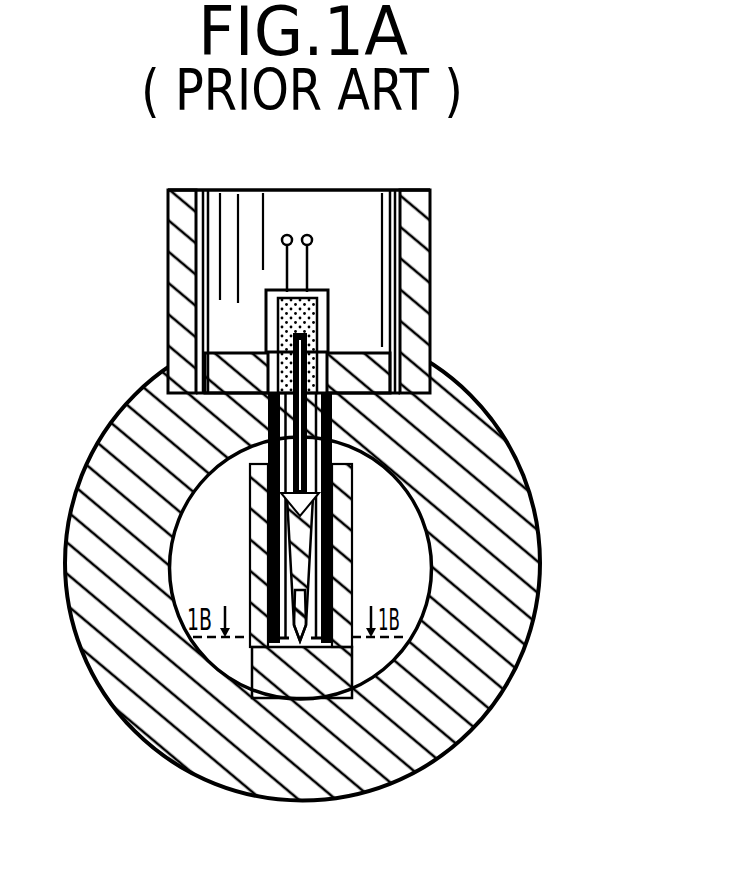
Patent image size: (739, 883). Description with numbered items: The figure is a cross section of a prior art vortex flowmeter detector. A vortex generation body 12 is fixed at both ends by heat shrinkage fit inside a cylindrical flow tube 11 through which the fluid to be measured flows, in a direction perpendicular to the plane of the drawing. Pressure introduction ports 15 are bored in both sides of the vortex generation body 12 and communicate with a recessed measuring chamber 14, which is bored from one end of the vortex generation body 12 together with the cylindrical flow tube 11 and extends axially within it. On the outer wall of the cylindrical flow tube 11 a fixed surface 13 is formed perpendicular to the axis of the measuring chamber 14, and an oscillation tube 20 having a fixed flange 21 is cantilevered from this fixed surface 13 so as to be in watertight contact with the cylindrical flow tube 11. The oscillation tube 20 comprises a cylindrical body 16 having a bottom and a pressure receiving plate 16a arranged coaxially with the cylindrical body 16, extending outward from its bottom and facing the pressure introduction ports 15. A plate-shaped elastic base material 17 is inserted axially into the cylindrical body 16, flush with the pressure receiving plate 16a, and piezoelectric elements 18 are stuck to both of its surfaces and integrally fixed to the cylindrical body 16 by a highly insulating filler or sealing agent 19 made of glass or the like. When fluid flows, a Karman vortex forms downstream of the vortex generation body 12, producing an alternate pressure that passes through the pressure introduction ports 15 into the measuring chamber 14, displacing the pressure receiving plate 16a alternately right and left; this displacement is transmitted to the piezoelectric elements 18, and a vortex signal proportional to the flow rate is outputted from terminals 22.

The cylindrical flow tube 11 is at (127, 710).
The vortex generation body 12 is at (252, 562).
The fixed surface 13 is at (200, 403).
The measuring chamber 14 is at (318, 522).
The pressure introduction ports 15 is at (248, 468).
The cylindrical body 16 is at (340, 450).
The pressure receiving plate 16a is at (305, 567).
The elastic base material 17 is at (305, 413).
The piezoelectric elements 18 is at (315, 433).
The filler or sealing agent 19 is at (320, 313).
The oscillation tube 20 is at (340, 338).
The fixed flange 21 is at (230, 357).
The terminals 22 is at (312, 255).